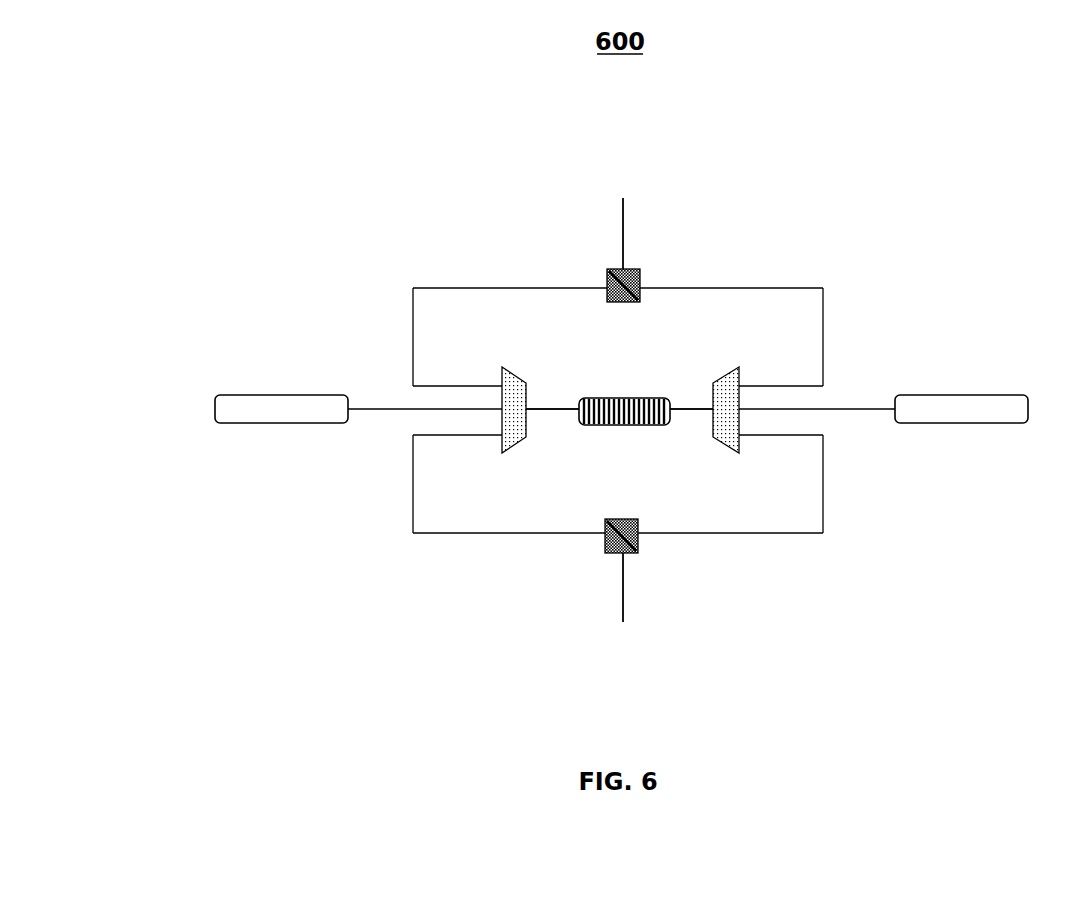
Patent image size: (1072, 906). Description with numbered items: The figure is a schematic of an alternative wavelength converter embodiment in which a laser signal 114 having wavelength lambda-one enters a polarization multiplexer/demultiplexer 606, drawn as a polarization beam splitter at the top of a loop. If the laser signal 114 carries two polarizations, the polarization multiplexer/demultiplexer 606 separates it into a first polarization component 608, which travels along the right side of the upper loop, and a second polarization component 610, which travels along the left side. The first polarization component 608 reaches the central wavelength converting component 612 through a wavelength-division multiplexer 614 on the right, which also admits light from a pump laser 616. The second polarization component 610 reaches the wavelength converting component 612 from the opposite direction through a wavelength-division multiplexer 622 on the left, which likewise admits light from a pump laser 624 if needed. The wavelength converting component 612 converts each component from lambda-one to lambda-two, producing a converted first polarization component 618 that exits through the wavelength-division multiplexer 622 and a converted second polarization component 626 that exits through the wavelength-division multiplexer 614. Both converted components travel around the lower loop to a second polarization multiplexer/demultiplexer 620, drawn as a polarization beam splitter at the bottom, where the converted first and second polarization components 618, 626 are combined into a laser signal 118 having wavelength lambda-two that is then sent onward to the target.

The laser signal 114 is at (625, 218).
The laser signal 118 is at (625, 612).
The polarization multiplexer/demultiplexer 606 is at (640, 278).
The first polarization component 608 is at (752, 288).
The second polarization component 610 is at (456, 287).
The wavelength converting component 612 is at (655, 397).
The wavelength-division multiplexer 614 is at (727, 380).
The pump laser 616 is at (985, 425).
The converted first polarization component 618 is at (547, 405).
The polarization multiplexer/demultiplexer 620 is at (605, 550).
The wavelength-division multiplexer 622 is at (512, 372).
The pump laser 624 is at (225, 425).
The converted second polarization component 626 is at (680, 413).